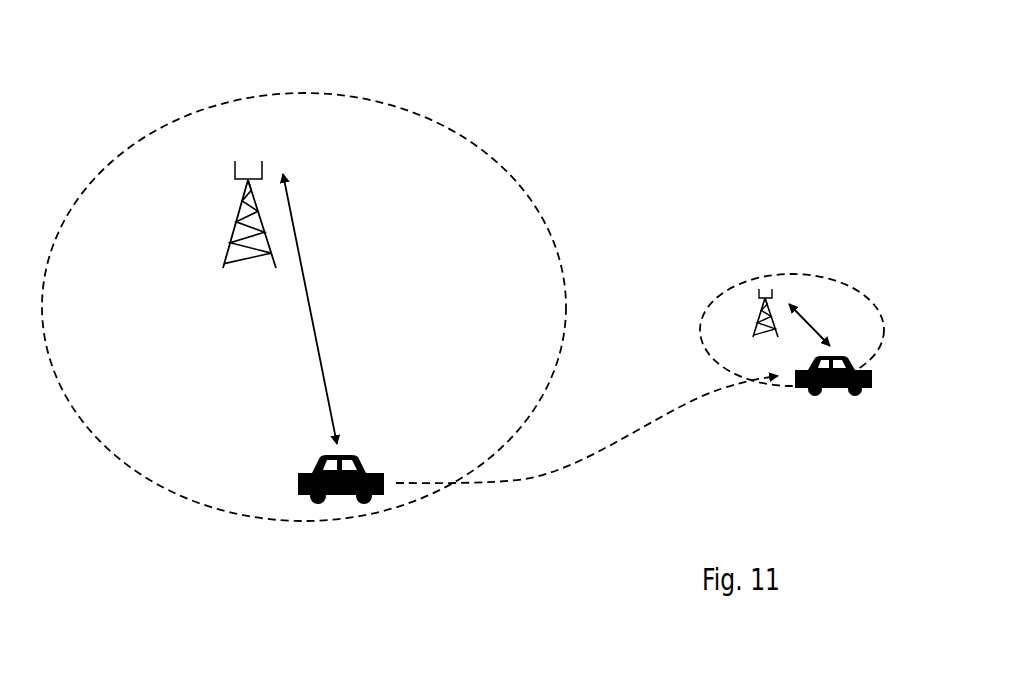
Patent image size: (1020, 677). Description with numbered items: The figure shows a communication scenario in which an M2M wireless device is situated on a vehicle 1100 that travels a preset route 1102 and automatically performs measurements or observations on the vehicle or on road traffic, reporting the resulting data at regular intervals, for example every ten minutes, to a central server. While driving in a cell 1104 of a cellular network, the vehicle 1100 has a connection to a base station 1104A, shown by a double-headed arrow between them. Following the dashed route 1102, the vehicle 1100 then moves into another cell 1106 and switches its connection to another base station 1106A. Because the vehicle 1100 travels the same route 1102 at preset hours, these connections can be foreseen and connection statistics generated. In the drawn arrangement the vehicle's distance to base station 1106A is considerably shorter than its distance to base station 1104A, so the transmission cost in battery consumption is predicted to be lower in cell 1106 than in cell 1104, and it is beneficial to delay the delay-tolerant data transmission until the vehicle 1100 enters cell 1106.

The vehicle 1100 is at (297, 483).
The preset route 1102 is at (633, 438).
The cell 1104 is at (207, 106).
The base station 1104A is at (236, 216).
The cell 1106 is at (818, 275).
The base station 1106A is at (759, 307).